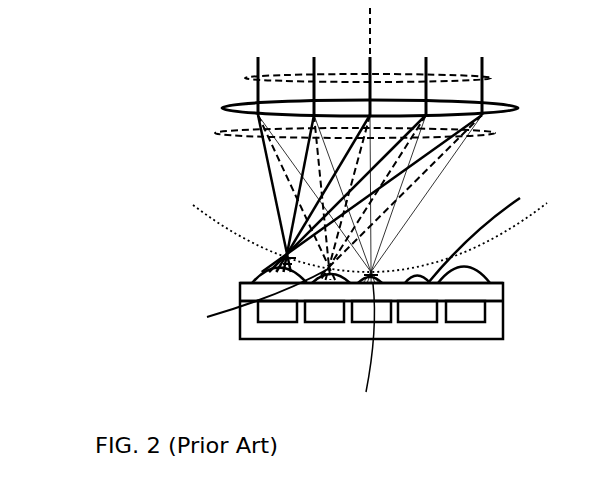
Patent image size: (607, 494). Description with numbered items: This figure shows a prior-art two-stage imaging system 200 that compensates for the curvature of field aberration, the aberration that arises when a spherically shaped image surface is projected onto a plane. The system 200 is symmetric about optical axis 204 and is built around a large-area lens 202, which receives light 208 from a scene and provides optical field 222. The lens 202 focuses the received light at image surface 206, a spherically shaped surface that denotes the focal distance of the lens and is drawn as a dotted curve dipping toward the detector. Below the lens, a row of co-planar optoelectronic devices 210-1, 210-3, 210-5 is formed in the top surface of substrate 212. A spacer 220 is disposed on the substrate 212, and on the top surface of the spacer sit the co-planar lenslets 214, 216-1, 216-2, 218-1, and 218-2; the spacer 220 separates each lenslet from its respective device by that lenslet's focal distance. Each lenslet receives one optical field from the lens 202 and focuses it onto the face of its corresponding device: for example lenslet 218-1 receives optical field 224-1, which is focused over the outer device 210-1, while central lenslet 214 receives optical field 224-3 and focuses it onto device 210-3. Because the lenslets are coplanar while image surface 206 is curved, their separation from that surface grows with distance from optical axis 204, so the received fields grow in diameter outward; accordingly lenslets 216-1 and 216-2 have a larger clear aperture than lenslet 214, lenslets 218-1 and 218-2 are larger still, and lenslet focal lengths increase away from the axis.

The imaging system 200 is at (170, 88).
The lens 202 is at (518, 108).
The optical axis 204 is at (371, 40).
The image surface 206 is at (547, 203).
The light 208 is at (490, 78).
The optoelectronic device 210-1 is at (278, 322).
The optoelectronic device 210-3 is at (370, 322).
The optoelectronic device 210-5 is at (465, 322).
The substrate 212 is at (477, 340).
The lenslet 214 is at (351, 348).
The lenslet 216-1 is at (242, 298).
The lenslet 216-2 is at (486, 229).
The lenslet 218-1 is at (263, 279).
The lenslet 218-2 is at (483, 277).
The spacer 220 is at (503, 292).
The optical field 222 is at (247, 135).
The optical field 224-1 is at (265, 266).
The optical field 224-3 is at (388, 270).